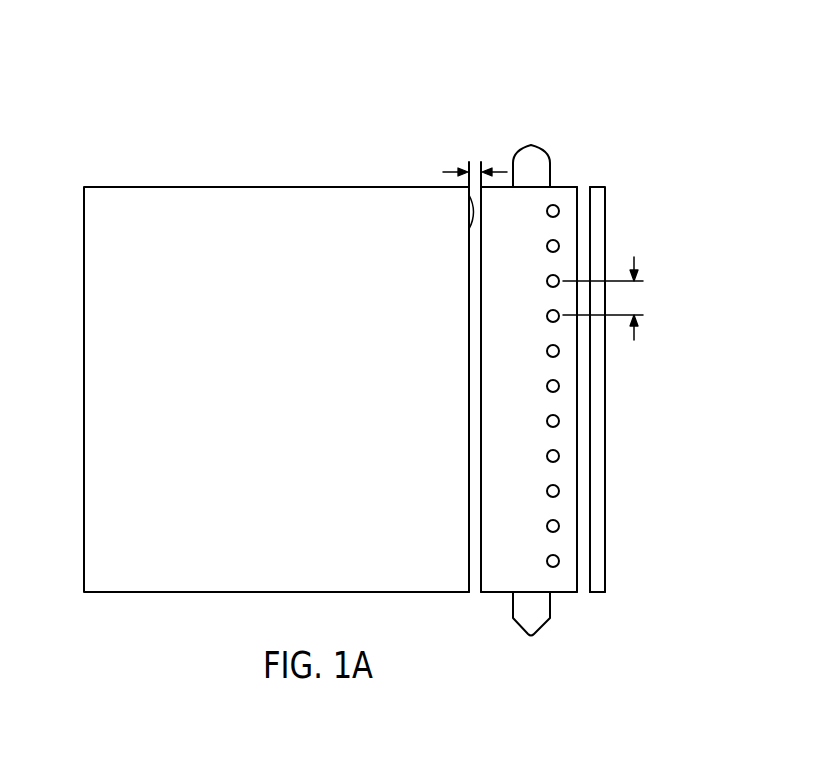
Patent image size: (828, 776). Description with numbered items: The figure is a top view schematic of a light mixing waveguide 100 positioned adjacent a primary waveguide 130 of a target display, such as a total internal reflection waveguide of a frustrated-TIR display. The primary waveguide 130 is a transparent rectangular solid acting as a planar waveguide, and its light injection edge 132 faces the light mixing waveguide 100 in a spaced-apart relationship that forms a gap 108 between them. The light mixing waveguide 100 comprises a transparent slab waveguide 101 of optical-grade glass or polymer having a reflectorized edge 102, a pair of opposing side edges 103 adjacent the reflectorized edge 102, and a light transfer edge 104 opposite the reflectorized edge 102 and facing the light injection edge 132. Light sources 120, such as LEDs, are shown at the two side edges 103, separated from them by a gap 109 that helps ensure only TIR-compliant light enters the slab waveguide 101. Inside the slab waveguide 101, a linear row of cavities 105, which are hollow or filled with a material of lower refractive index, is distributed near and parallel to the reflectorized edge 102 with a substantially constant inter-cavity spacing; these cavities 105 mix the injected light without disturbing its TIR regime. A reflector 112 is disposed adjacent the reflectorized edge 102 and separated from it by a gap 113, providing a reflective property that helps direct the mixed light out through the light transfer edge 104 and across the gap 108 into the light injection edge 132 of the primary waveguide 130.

The light mixing waveguide 100 is at (570, 172).
The slab waveguide 101 is at (531, 367).
The reflectorized edge 102 is at (580, 197).
The side edges 103 is at (578, 190).
The light transfer edge 104 is at (481, 568).
The cavities 105 is at (548, 487).
The gap 108 is at (446, 170).
The gap 109 is at (514, 594).
The reflector 112 is at (598, 242).
The gap 113 is at (582, 590).
The light sources 120 is at (531, 146).
The primary waveguide 130 is at (278, 429).
The light injection edge 132 is at (470, 229).